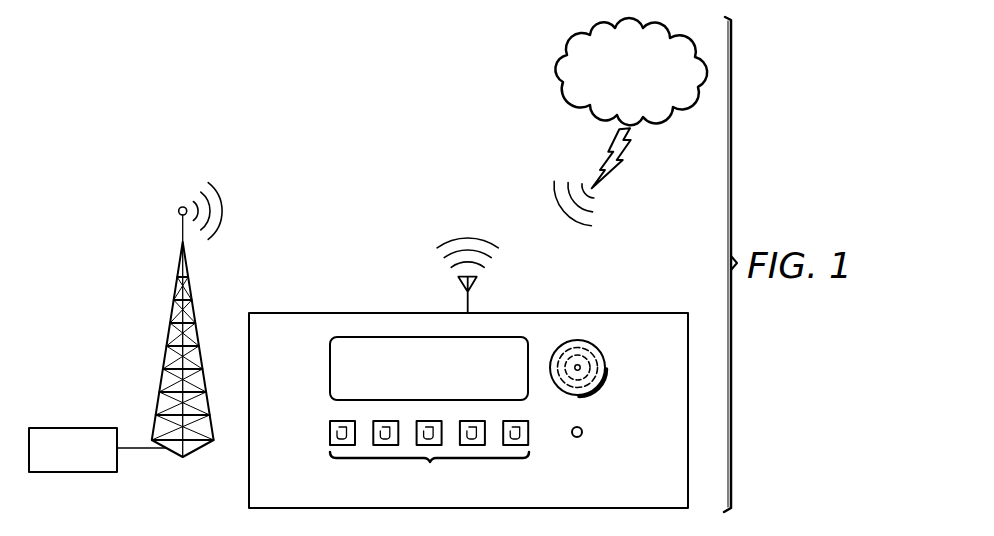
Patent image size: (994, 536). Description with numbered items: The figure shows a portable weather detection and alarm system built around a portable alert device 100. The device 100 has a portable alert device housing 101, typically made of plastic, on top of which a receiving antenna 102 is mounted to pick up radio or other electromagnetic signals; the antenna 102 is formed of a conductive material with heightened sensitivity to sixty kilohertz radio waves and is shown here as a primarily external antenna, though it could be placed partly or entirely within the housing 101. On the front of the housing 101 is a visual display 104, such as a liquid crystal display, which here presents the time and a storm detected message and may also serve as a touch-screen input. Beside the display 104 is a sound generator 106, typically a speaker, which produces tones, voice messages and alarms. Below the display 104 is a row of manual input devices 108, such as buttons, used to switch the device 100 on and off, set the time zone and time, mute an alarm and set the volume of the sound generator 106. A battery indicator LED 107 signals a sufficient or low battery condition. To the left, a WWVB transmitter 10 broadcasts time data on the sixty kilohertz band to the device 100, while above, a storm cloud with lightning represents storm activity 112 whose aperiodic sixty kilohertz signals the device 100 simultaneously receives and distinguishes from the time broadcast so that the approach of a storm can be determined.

The WWVB radio transmitter tower 10 is at (163, 350).
The portable alert device 100 is at (352, 292).
The portable alert device housing 101 is at (577, 312).
The receiving antenna 102 is at (456, 283).
The visual display 104 is at (330, 364).
The sound generator 106 is at (606, 365).
The battery indicator LED 107 is at (578, 437).
The manual input devices 108 is at (429, 458).
The storm activity 112 is at (622, 160).